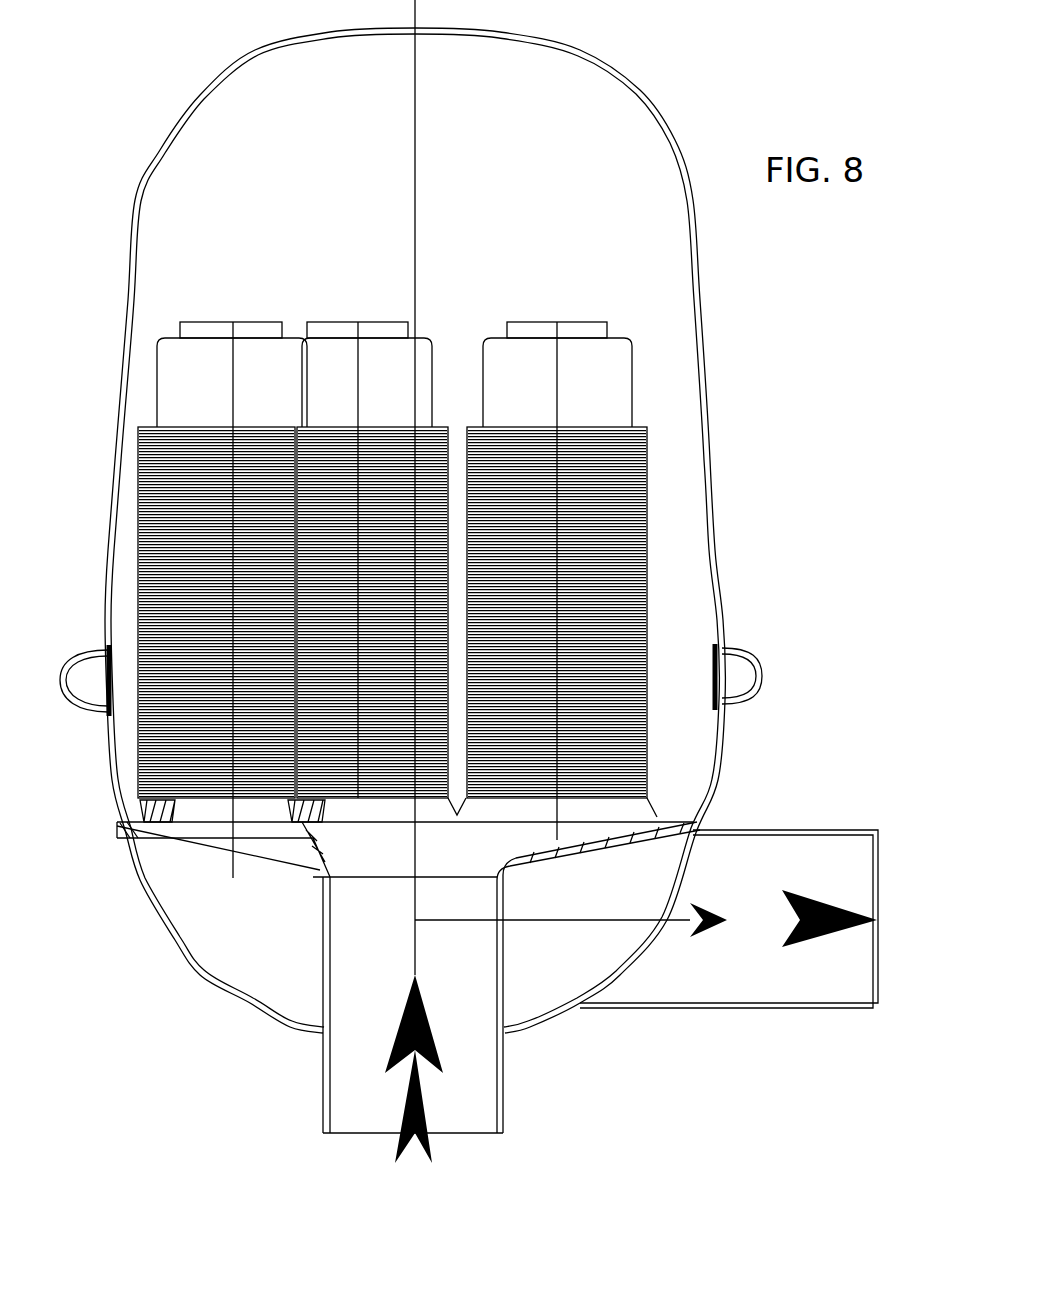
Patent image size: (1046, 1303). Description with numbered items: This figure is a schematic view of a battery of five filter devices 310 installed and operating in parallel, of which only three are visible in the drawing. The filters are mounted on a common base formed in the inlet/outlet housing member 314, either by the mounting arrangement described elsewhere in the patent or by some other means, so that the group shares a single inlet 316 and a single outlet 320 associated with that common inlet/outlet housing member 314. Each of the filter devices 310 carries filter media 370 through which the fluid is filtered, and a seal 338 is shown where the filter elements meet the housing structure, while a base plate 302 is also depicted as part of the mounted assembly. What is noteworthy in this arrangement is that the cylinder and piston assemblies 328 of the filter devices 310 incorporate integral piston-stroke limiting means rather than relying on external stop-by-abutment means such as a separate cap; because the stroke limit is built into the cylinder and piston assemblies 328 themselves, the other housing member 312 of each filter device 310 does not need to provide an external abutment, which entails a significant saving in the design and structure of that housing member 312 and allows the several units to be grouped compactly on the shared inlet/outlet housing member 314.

The housing member 312 is at (653, 68).
The filter devices 310 is at (483, 558).
The cylinder and piston assemblies 328 is at (278, 355).
The filter media 370 is at (605, 555).
The inlet/outlet housing member 314 is at (733, 741).
The base plate 302 is at (163, 832).
The seal 338 is at (178, 840).
The inlet 316 is at (323, 1055).
The outlet 320 is at (830, 1008).